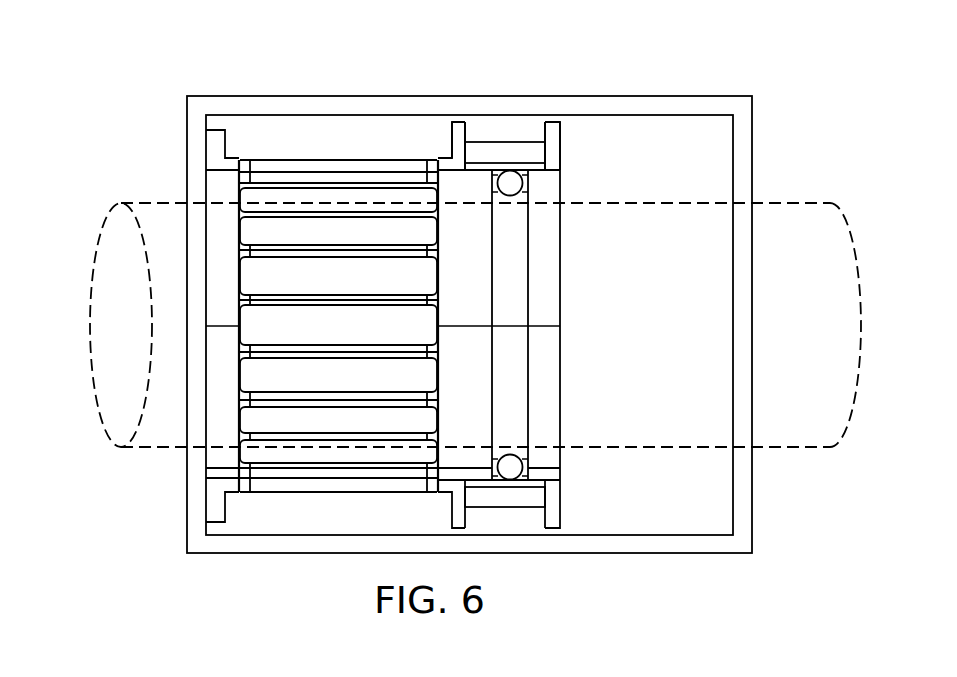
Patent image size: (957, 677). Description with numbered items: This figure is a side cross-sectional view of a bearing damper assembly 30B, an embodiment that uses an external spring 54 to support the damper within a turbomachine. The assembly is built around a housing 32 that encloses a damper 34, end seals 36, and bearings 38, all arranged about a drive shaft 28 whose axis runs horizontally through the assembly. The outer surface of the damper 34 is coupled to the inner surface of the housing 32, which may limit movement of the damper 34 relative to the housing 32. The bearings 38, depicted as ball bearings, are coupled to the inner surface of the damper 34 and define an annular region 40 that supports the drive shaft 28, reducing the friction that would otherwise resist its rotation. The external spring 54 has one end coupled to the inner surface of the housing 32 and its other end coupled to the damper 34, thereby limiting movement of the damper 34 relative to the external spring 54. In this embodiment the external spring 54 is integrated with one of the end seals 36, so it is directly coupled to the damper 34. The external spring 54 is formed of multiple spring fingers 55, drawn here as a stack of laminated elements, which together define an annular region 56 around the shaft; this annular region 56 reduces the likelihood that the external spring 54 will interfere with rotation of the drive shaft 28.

The bearing damper assembly 30B is at (168, 29).
The drive shaft 28 is at (788, 201).
The housing 32 is at (258, 94).
The damper 34 is at (505, 281).
The end seals 36 is at (450, 128).
The bearings 38 is at (523, 182).
The annular region 40 is at (539, 285).
The external spring 54 is at (217, 157).
The spring fingers 55 is at (235, 276).
The annular region 56 is at (290, 325).